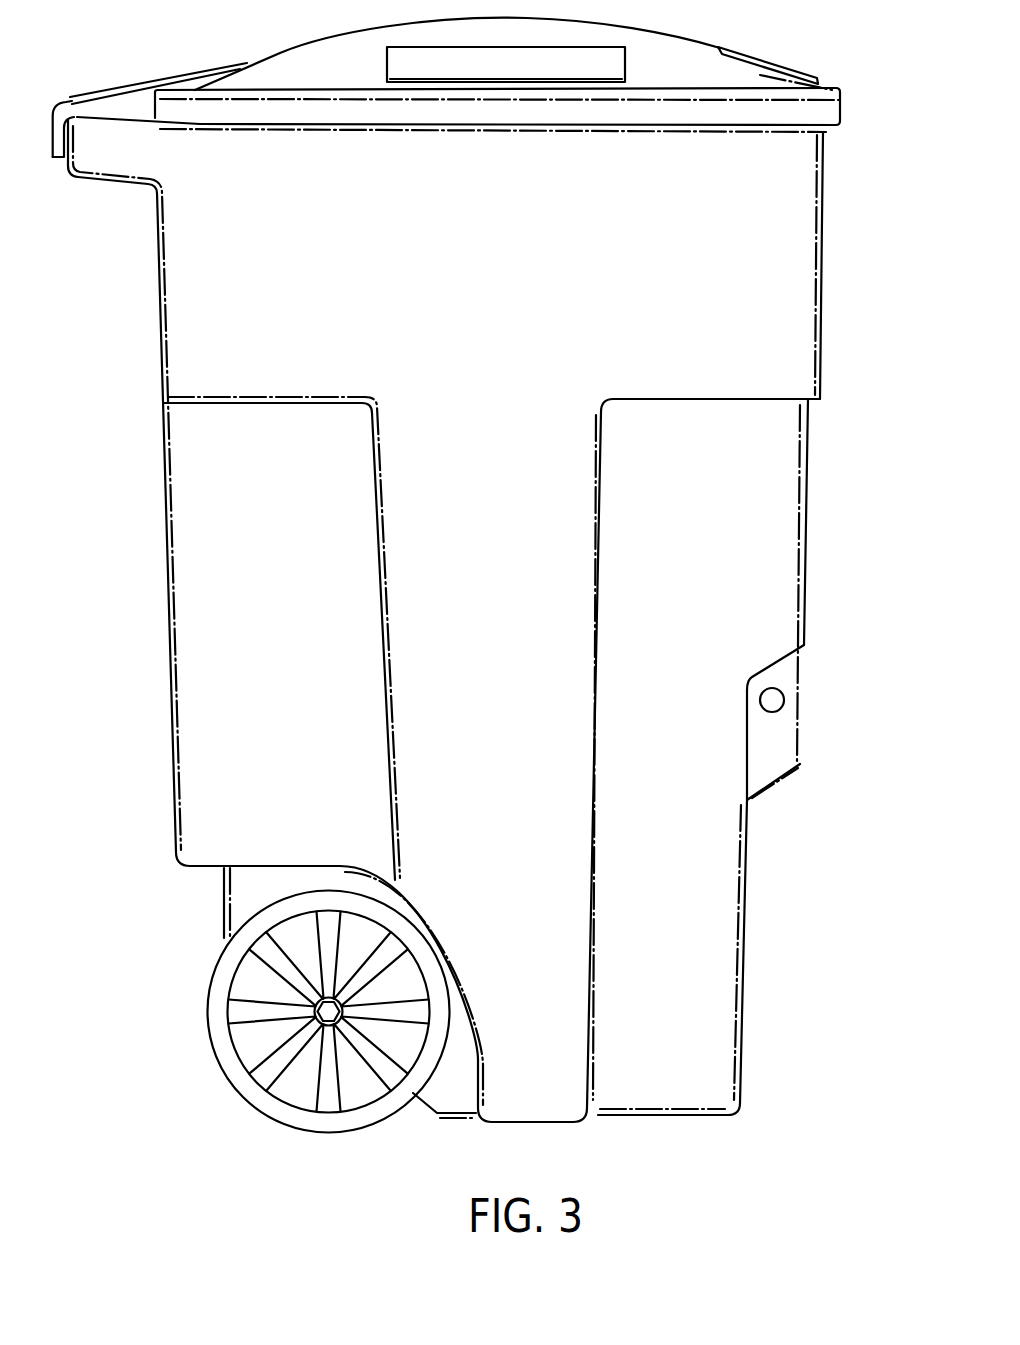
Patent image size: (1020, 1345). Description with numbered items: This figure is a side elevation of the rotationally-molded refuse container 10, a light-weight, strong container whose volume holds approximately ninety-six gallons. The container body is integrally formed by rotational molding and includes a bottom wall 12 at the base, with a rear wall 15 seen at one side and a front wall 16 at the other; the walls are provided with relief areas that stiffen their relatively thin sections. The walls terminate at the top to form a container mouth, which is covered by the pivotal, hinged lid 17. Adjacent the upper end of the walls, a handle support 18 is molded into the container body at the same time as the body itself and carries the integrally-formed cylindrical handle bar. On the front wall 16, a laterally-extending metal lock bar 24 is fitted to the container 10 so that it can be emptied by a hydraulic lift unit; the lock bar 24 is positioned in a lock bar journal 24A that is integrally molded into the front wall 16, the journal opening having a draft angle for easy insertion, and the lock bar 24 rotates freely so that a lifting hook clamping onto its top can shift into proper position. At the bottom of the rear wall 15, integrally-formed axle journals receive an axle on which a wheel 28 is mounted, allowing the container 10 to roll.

The refuse container 10 is at (476, 597).
The bottom wall 12 is at (703, 1118).
The rear wall 15 is at (160, 378).
The front wall 16 is at (793, 268).
The lid 17 is at (760, 76).
The handle support 18 is at (110, 157).
The lock bar 24 is at (785, 701).
The lock bar journal 24A is at (779, 755).
The wheel 28 is at (223, 1056).